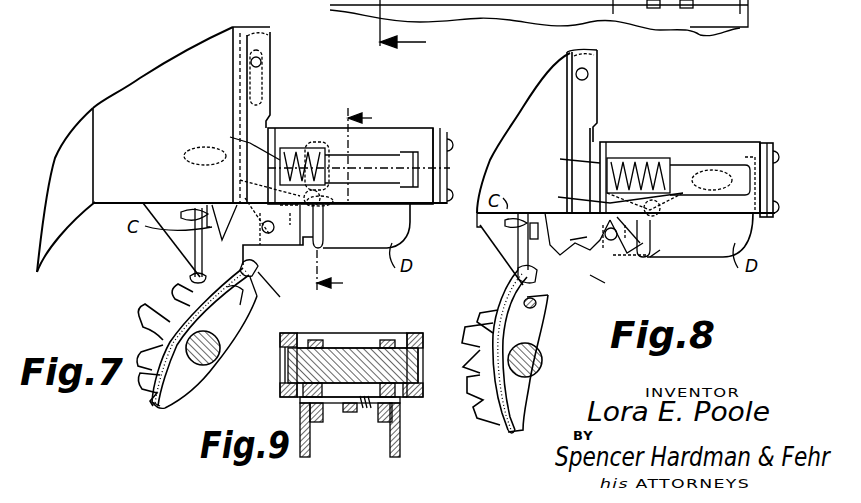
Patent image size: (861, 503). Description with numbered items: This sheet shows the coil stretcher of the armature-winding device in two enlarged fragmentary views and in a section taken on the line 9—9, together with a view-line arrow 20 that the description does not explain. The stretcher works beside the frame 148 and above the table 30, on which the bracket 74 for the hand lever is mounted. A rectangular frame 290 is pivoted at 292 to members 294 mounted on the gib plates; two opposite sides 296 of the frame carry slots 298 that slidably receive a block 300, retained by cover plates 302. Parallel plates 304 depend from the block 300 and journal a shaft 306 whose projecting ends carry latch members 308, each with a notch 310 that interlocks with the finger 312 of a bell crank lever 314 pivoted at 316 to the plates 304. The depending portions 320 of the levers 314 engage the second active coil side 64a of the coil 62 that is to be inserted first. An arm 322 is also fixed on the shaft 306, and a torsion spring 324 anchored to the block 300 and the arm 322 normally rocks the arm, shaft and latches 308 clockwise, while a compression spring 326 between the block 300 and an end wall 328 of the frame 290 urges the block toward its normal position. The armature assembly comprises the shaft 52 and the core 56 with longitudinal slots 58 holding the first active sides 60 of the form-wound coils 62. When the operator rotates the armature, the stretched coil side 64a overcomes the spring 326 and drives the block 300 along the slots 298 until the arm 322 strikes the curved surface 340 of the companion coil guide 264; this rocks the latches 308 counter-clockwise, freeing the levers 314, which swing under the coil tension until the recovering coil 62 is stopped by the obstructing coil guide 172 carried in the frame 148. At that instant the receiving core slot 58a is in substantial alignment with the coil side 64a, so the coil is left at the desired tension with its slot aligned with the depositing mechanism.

In FIG. 7, the arrow / section indicator 20 is at (515, 24).
In FIG. 8, the table 30 is at (693, 32).
In FIG. 8, the bracket 74 is at (680, 12).
In FIG. 7, the frame 148 is at (188, 58).
In FIG. 8, the frame 148 is at (553, 80).
In FIG. 7, the coil guide 172 is at (186, 257).
In FIG. 8, the coil guide 172 is at (507, 262).
In FIG. 7, the companion coil guide 264 is at (271, 80).
In FIG. 8, the companion coil guide 264 is at (520, 262).
In FIG. 7, the rectangular frame 290 is at (456, 236).
In FIG. 8, the rectangular frame 290 is at (764, 129).
In FIG. 7, the pivot 292 is at (262, 62).
In FIG. 8, the pivot 292 is at (589, 73).
In FIG. 7, the members 294 is at (271, 35).
In FIG. 8, the members 294 is at (600, 55).
In FIG. 7, the opposite sides of frame 296 is at (388, 131).
In FIG. 9, the opposite sides of frame 296 is at (297, 334).
In FIG. 7, the slots 298 is at (453, 157).
In FIG. 9, the slots 298 is at (423, 393).
In FIG. 8, the slots 298 is at (618, 178).
In FIG. 7, the block 300 is at (340, 150).
In FIG. 9, the block 300 is at (343, 354).
In FIG. 8, the block 300 is at (688, 168).
In FIG. 7, the cover plates 302 is at (428, 134).
In FIG. 9, the cover plates 302 is at (286, 358).
In FIG. 8, the cover plates 302 is at (603, 149).
In FIG. 9, the parallel plates 304 is at (385, 422).
In FIG. 8, the parallel plates 304 is at (717, 258).
In FIG. 7, the shaft 306 is at (318, 208).
In FIG. 9, the shaft 306 is at (310, 405).
In FIG. 8, the shaft 306 is at (660, 209).
In FIG. 7, the latch members 308 is at (324, 234).
In FIG. 9, the latch members 308 is at (400, 421).
In FIG. 8, the latch members 308 is at (667, 228).
In FIG. 7, the notch 310 is at (318, 253).
In FIG. 8, the notch 310 is at (650, 243).
In FIG. 7, the finger 312 is at (298, 241).
In FIG. 8, the finger 312 is at (650, 258).
In FIG. 7, the bell crank lever 314 is at (217, 202).
In FIG. 8, the bell crank lever 314 is at (627, 255).
In FIG. 7, the pivot 316 is at (268, 236).
In FIG. 8, the pivot 316 is at (613, 243).
In FIG. 7, the depending portions 320 is at (250, 300).
In FIG. 8, the depending portions 320 is at (581, 269).
In FIG. 7, the arm 322 is at (233, 187).
In FIG. 9, the arm 322 is at (350, 393).
In FIG. 8, the arm 322 is at (600, 197).
In FIG. 9, the torsion spring 324 is at (370, 408).
In FIG. 8, the torsion spring 324 is at (712, 180).
In FIG. 7, the compression spring 326 is at (300, 146).
In FIG. 8, the compression spring 326 is at (647, 200).
In FIG. 7, the end wall 328 is at (241, 143).
In FIG. 8, the end wall 328 is at (565, 161).
In FIG. 7, the curved surface 340 is at (237, 167).
In FIG. 7, the armature shaft 52 is at (220, 348).
In FIG. 8, the armature shaft 52 is at (541, 347).
In FIG. 7, the core 56 is at (177, 387).
In FIG. 8, the core 56 is at (521, 402).
In FIG. 7, the longitudinal slots 58 is at (143, 307).
In FIG. 8, the longitudinal slots 58 is at (495, 421).
In FIG. 7, the core slot 58a is at (190, 278).
In FIG. 8, the core slot 58a is at (527, 300).
In FIG. 7, the first active sides 60 is at (153, 402).
In FIG. 8, the first active sides 60 is at (508, 431).
In FIG. 7, the form-wound armature coils 62 is at (187, 318).
In FIG. 8, the form-wound armature coils 62 is at (501, 330).
In FIG. 7, the second active coil side 64a is at (258, 287).
In FIG. 8, the second active coil side 64a is at (537, 274).
In FIG. 7, the section line 9— 9 is at (345, 196).